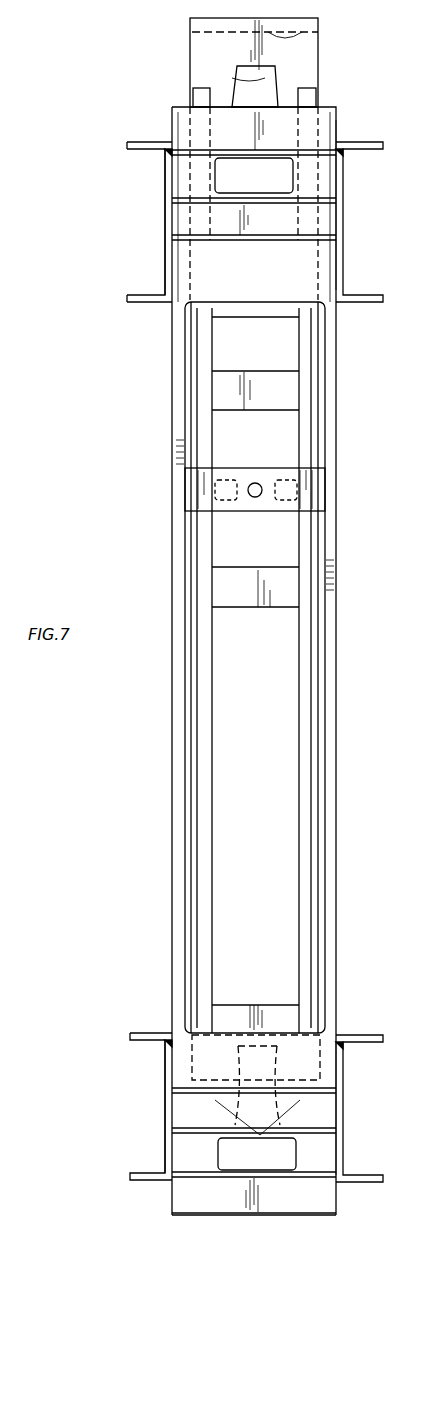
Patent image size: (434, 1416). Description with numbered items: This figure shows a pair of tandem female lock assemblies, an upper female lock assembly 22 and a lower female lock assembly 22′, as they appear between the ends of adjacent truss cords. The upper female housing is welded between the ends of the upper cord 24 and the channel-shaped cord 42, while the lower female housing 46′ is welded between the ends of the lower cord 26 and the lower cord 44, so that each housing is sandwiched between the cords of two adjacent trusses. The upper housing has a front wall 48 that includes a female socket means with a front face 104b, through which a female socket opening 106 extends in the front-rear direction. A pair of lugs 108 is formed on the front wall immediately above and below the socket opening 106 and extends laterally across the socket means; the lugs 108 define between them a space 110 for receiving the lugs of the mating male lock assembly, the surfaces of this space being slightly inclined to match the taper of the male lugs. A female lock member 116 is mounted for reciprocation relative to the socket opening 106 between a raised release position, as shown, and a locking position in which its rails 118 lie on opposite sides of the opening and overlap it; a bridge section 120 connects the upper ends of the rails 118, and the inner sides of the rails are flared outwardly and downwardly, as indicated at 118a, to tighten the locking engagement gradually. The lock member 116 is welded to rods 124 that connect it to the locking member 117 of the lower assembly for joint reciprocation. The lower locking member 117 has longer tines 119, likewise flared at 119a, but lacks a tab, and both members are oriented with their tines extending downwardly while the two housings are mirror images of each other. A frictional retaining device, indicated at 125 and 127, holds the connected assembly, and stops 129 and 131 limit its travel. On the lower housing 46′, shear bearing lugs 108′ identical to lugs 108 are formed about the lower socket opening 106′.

The female lock member 116 is at (188, 22).
The bridge section 120 is at (268, 40).
The flared inner side of rail 118a is at (240, 78).
The rails 118 is at (288, 100).
The lugs 108 is at (313, 127).
The space 110 is at (183, 153).
The female socket opening 106 is at (225, 178).
The front wall 48 is at (270, 277).
The front face 104b is at (325, 177).
The channel-shaped cord 42 is at (166, 190).
The upper female lock assembly 22 is at (147, 312).
The upper cord 24 is at (339, 234).
The rods 124 is at (305, 657).
The stops 129 is at (272, 368).
The frictional retaining device 125 is at (314, 487).
The frictional retaining device 127 is at (258, 478).
The stops 131 is at (213, 488).
The locking member 117 is at (260, 1010).
The tines 119 is at (293, 1100).
The shear bearing lugs 108′ is at (185, 1106).
The flared inner side of tine 119a is at (257, 1154).
The socket opening 106′ is at (216, 1152).
The lower cord 26 is at (170, 1082).
The lower female lock assembly 22′ is at (148, 1000).
The lower cord 44 is at (340, 1103).
The female housing 46′ is at (330, 1045).